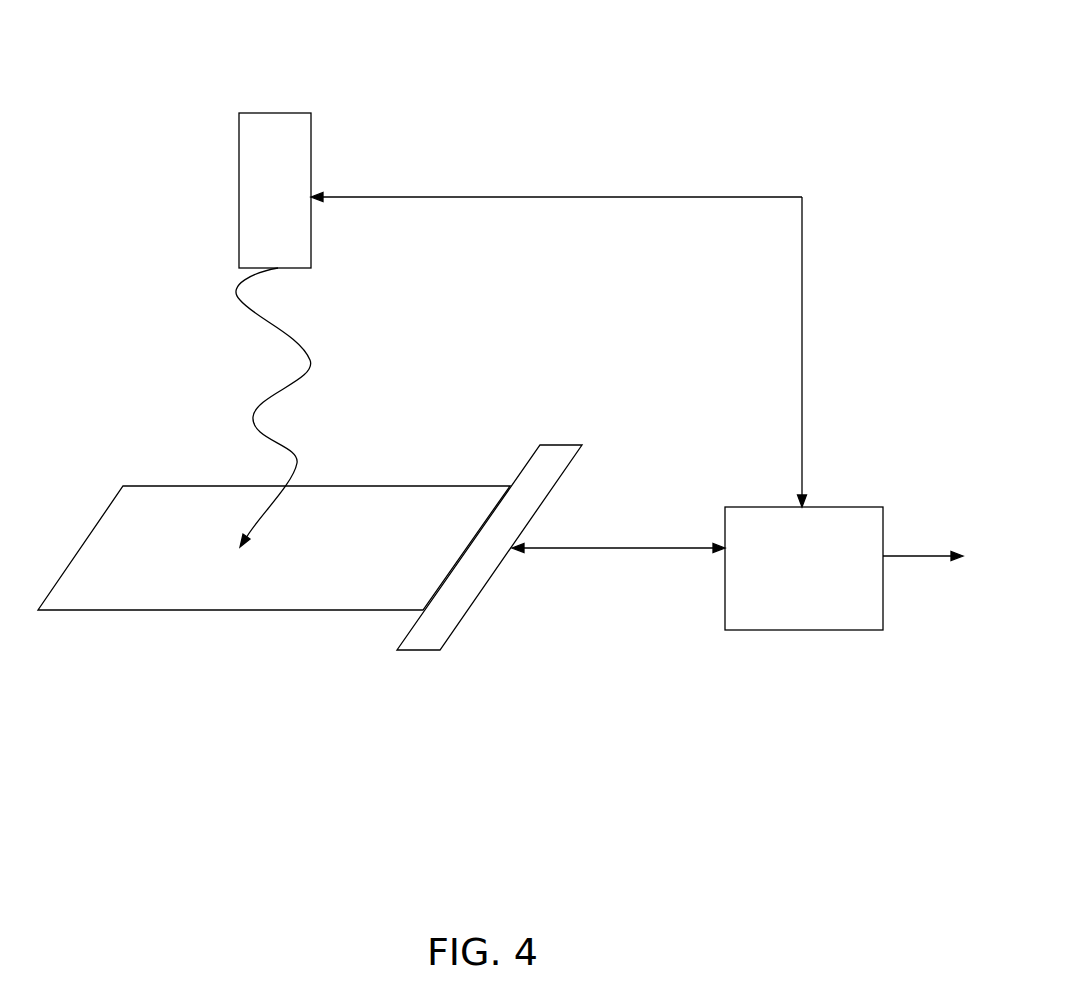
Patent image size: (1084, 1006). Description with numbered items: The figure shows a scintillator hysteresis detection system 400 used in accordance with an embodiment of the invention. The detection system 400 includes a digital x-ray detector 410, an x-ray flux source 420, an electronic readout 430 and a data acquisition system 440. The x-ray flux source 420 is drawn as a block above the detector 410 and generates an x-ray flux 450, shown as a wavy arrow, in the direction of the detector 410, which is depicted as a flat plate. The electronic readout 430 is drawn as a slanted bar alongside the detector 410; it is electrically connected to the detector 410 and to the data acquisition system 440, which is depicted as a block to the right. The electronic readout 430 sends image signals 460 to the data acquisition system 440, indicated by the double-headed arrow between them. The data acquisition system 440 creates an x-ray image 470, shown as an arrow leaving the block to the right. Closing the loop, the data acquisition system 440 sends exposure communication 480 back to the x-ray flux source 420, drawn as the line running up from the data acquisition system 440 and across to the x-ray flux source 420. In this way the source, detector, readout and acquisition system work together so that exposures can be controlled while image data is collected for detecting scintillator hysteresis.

The scintillator hysteresis detection system 400 is at (455, 108).
The digital x-ray detector 410 is at (100, 610).
The x-ray flux source 420 is at (239, 172).
The electronic readout 430 is at (407, 650).
The data acquisition system 440 is at (752, 630).
The x-ray flux 450 is at (310, 360).
The image signals 460 is at (587, 548).
The x-ray image 470 is at (912, 556).
The exposure communication 480 is at (627, 197).